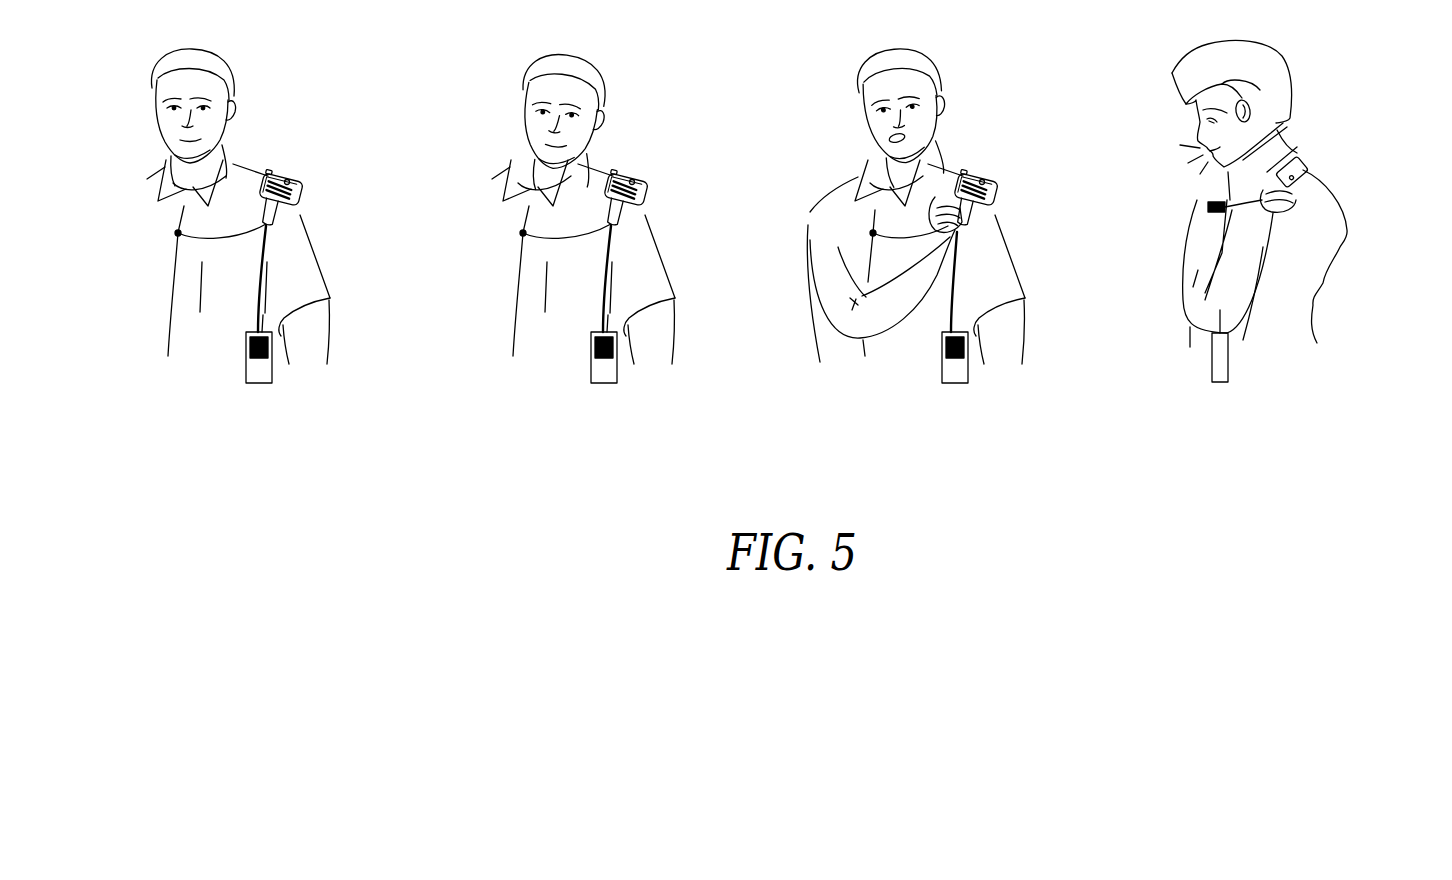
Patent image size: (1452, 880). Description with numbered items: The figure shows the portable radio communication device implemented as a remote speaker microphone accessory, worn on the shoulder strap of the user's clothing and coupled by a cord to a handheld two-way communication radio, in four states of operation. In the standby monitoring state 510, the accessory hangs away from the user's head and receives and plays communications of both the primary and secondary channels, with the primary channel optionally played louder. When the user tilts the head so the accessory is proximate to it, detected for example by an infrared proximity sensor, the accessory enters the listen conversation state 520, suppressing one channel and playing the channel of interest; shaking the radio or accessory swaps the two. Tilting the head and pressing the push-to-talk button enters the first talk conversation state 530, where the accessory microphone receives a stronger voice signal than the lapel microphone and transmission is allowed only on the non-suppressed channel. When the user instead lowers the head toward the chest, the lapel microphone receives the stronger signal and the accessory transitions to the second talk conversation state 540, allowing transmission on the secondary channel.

The standby monitoring state 510 is at (350, 428).
The listen conversation state 520 is at (711, 428).
The first talk conversation state 530 is at (1057, 428).
The second talk conversation state 540 is at (1426, 430).